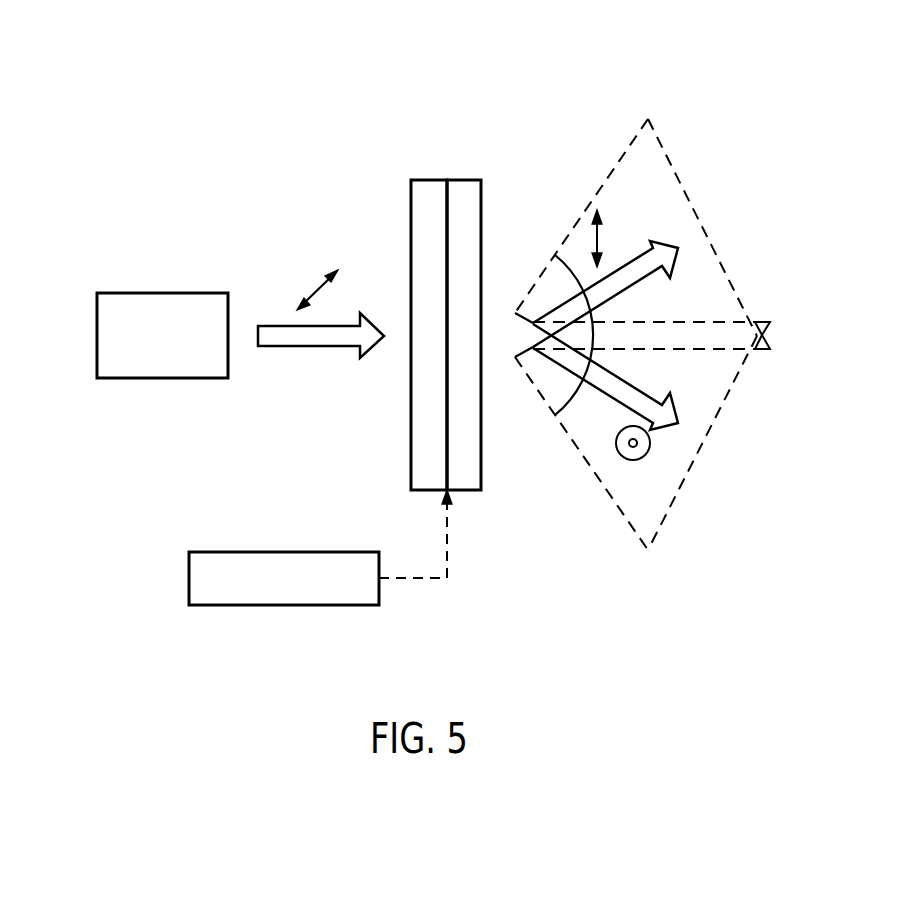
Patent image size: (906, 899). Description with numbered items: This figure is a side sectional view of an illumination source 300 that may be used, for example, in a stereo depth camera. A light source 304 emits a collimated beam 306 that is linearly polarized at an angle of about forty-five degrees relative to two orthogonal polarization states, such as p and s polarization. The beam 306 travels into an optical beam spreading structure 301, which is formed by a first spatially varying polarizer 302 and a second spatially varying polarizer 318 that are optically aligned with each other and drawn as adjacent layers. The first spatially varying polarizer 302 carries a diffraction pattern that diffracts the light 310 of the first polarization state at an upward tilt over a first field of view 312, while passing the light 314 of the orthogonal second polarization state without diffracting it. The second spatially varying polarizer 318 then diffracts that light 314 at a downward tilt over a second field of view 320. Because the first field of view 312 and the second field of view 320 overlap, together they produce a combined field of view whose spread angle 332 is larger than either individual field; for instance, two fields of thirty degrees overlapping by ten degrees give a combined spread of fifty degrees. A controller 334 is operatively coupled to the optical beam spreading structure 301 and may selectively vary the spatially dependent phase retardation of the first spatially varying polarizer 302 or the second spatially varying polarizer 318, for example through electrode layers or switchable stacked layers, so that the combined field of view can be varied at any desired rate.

The illumination source 300 is at (182, 147).
The optical beam spreading structure 301 is at (442, 130).
The first spatially varying polarizer 302 is at (428, 180).
The second spatially varying polarizer 318 is at (460, 180).
The light source 304 is at (97, 334).
The collimated beam 306 is at (310, 348).
The light of the first polarization state 310 is at (638, 288).
The light of the second polarization state 314 is at (638, 382).
The first field of view 312 is at (682, 182).
The second field of view 320 is at (682, 490).
The spread angle of the combined field of view 332 is at (572, 410).
The controller 334 is at (189, 578).